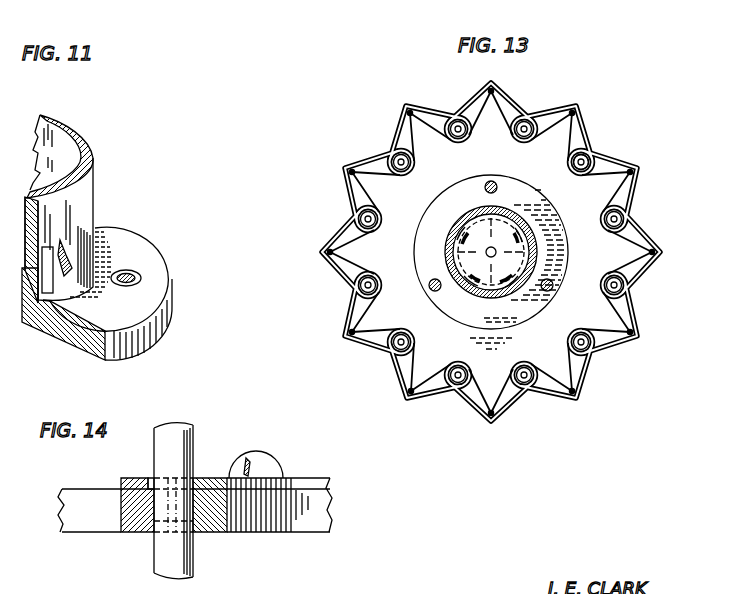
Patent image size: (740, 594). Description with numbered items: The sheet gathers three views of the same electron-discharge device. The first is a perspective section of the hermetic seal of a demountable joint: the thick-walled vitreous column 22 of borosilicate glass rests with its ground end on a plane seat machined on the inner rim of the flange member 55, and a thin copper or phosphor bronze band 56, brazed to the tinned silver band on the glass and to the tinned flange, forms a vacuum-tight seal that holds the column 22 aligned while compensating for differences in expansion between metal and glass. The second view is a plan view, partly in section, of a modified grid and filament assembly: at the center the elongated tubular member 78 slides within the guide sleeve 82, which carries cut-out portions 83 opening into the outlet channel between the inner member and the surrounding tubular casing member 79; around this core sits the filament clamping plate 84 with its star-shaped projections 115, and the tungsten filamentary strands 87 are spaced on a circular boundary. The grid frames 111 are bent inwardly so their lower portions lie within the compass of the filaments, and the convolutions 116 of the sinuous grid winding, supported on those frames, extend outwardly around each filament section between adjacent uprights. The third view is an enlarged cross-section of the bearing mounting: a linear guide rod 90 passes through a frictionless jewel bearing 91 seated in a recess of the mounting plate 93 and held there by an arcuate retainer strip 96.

In FIG. 11, the vitreous heavy walled column 22 is at (88, 180).
In FIG. 11, the metal band 56 is at (95, 228).
In FIG. 11, the flange member 55 is at (160, 280).
In FIG. 13, the mounting plate 84 is at (391, 188).
In FIG. 13, the convolutions of the grid winding 116 is at (556, 108).
In FIG. 13, the filamentary strands 87 is at (632, 170).
In FIG. 13, the grid frames 111 is at (590, 158).
In FIG. 13, the star-shaped projections 115 is at (621, 183).
In FIG. 13, the guide sleeve 82 is at (466, 212).
In FIG. 13, the tubular casing member 79 is at (494, 207).
In FIG. 13, the tubular member 78 is at (452, 233).
In FIG. 13, the cut-out portions 83 is at (491, 252).
In FIG. 14, the mounting plate 93 is at (64, 489).
In FIG. 14, the frictionless jewel bearings 91 is at (121, 479).
In FIG. 14, the arcuate retainer strips 96 is at (134, 478).
In FIG. 14, the linear guide rods 90 is at (183, 457).